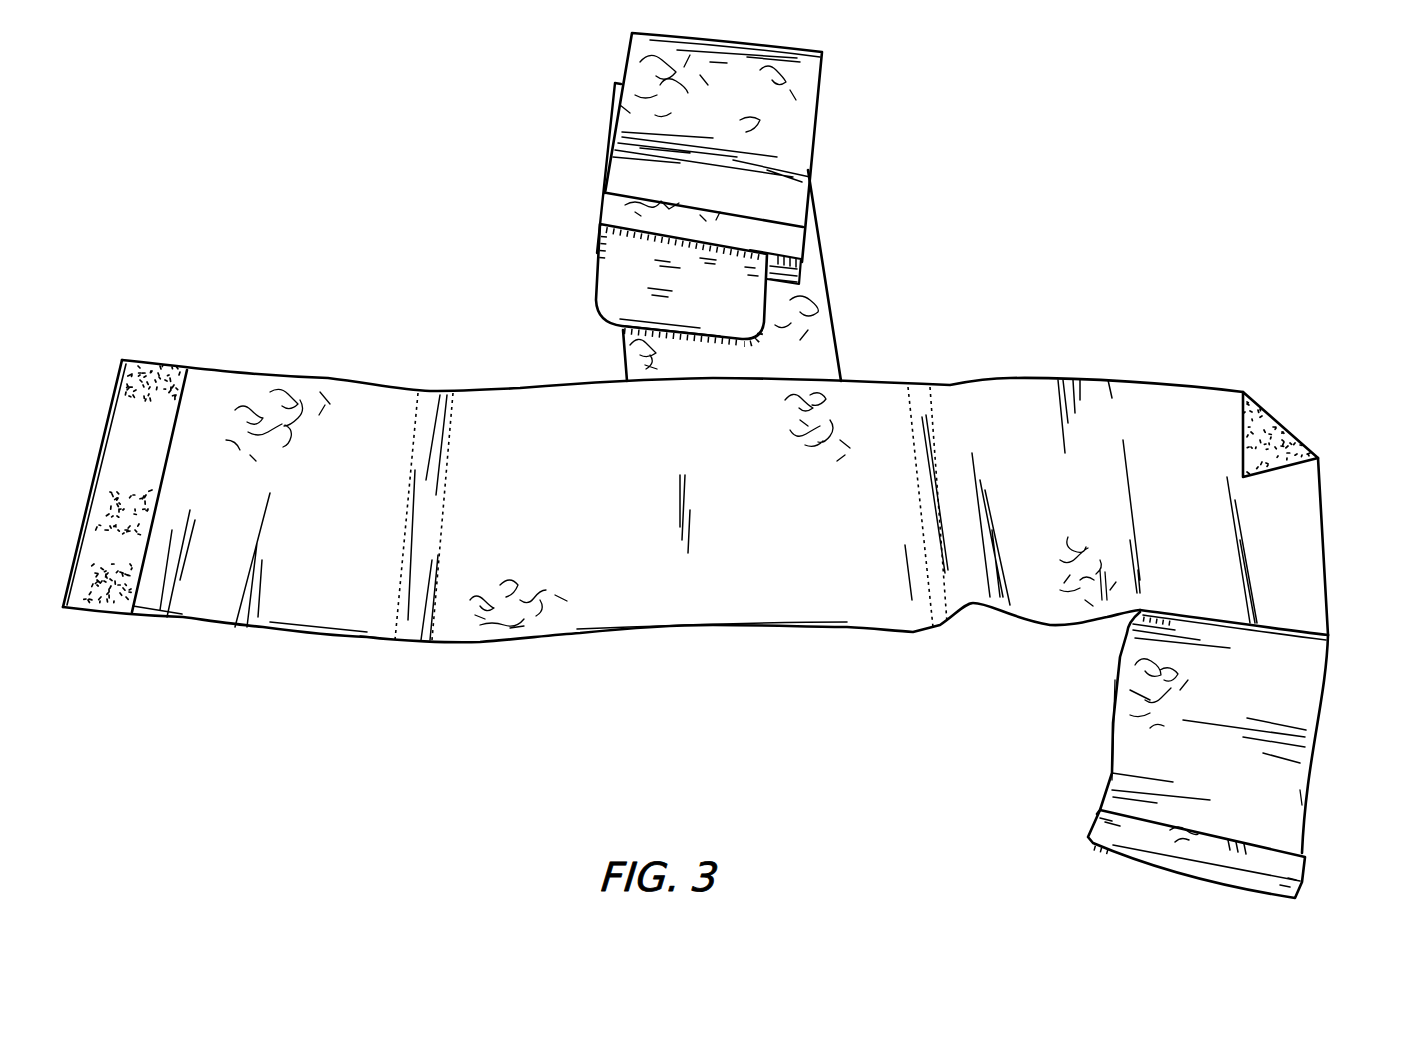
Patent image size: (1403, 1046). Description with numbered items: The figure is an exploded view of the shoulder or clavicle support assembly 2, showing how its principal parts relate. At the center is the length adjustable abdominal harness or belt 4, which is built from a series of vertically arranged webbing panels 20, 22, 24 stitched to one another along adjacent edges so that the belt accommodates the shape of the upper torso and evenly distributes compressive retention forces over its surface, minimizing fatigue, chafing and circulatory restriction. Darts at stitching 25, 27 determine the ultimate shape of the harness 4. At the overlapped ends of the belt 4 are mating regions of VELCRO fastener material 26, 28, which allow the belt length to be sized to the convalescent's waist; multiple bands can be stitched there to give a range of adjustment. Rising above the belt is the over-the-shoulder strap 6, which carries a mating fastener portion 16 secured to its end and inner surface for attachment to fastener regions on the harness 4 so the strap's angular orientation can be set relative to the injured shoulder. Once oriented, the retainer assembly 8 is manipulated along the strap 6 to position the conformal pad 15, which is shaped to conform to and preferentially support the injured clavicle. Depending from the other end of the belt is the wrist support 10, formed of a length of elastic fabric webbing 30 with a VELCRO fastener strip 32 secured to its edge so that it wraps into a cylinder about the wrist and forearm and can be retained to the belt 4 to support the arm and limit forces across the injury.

The shoulder support assembly 2 is at (1000, 235).
The abdominal harness 4 is at (369, 636).
The over-the-shoulder strap 6 is at (822, 88).
The retainer assembly 8 is at (607, 210).
The wrist support 10 is at (1300, 796).
The conformal pad 15 is at (597, 290).
The mating fastener portion 16 is at (797, 268).
The webbing panel 20 is at (331, 379).
The webbing panel 22 is at (512, 388).
The webbing panel 24 is at (990, 378).
The dart stitching 25 is at (397, 600).
The VELCRO fastener material region 26 is at (117, 610).
The dart stitching 27 is at (942, 607).
The VELCRO fastener material region 28 is at (1268, 412).
The elastic fabric webbing 30 is at (1315, 717).
The VELCRO fastener strip 32 is at (1308, 865).